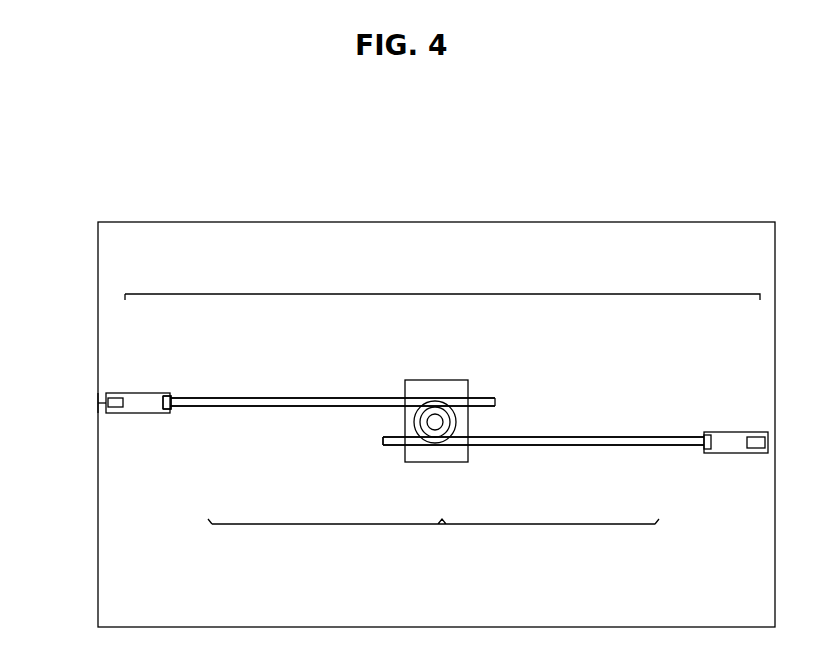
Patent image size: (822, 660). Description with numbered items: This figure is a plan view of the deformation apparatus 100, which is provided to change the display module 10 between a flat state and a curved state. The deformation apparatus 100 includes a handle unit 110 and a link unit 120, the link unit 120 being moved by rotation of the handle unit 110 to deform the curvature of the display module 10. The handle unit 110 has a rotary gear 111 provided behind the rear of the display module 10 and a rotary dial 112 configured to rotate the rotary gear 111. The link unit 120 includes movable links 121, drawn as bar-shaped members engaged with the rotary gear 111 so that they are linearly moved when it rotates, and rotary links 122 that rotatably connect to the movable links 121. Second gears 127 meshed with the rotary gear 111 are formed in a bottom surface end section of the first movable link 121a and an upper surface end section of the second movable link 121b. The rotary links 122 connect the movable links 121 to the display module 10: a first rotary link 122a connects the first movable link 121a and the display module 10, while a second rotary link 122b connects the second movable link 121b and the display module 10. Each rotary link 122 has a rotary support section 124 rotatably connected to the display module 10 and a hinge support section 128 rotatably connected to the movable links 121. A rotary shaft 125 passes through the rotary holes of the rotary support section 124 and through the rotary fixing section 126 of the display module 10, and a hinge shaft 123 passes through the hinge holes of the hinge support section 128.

The deformation apparatus 100 is at (441, 127).
The display module 10 is at (629, 221).
The handle unit 110 is at (441, 378).
The rotary gear 111 is at (454, 409).
The rotary dial 112 is at (461, 424).
The link unit 120 is at (610, 393).
The movable links 121 is at (433, 535).
The first movable link 121a is at (233, 407).
The second movable link 121b is at (627, 446).
The rotary links 122 is at (442, 285).
The first rotary link 122a is at (145, 393).
The second rotary link 122b is at (742, 432).
The hinge shaft 123 is at (165, 392).
The rotary support section 124 is at (97, 396).
The rotary shaft 125 is at (110, 396).
The rotary fixing section 126 is at (98, 404).
The second gears 127 is at (386, 437).
The hinge support section 128 is at (175, 399).